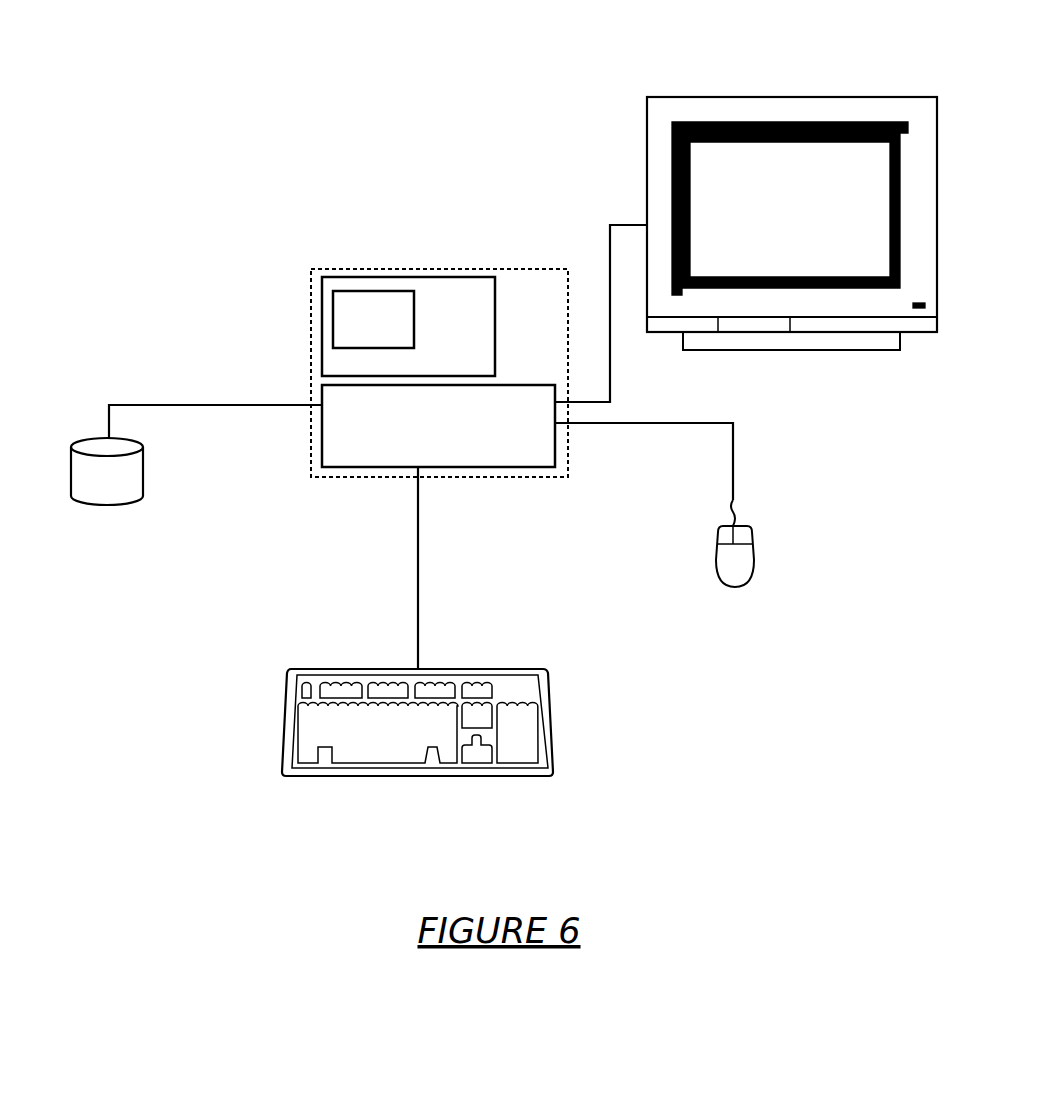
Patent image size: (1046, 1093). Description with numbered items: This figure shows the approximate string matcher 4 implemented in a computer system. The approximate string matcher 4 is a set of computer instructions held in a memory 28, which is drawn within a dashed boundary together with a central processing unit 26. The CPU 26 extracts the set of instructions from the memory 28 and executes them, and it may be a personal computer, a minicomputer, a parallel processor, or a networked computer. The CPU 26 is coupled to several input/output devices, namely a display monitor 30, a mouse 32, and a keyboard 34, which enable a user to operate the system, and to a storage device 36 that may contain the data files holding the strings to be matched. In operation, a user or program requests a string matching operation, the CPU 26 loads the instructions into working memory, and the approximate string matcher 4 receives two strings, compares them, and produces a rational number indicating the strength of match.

The approximate string matcher 4 is at (369, 306).
The central processing unit 26 is at (355, 452).
The memory 28 is at (458, 293).
The display monitor 30 is at (742, 97).
The mouse 32 is at (740, 563).
The keyboard 34 is at (540, 757).
The storage device 36 is at (90, 508).